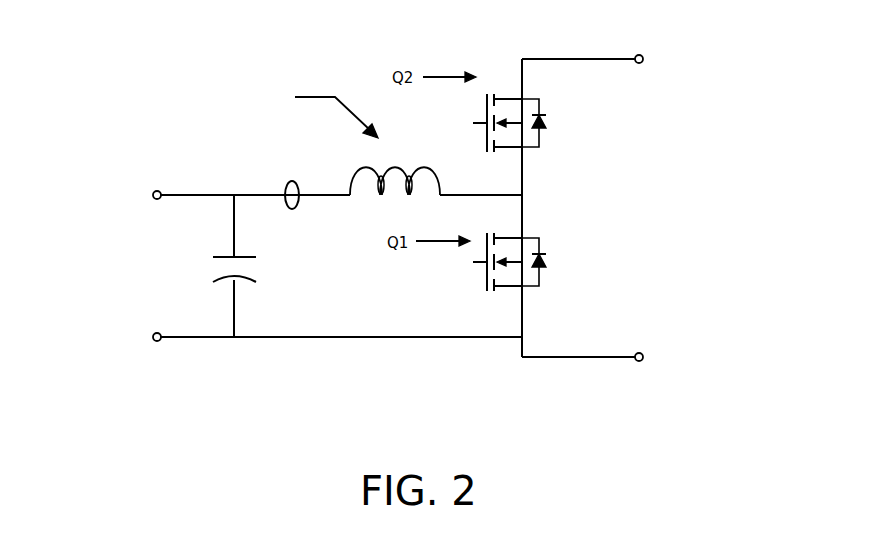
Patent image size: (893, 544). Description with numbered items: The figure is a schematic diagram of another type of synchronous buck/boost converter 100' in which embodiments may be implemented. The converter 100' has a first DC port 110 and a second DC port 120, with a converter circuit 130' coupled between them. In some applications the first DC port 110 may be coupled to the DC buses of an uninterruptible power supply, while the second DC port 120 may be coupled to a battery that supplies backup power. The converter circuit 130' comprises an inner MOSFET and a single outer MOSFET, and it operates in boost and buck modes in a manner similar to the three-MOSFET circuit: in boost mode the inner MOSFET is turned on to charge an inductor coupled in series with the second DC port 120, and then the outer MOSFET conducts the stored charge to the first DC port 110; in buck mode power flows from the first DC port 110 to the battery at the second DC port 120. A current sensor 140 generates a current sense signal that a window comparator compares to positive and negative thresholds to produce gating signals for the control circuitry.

The synchronous buck/boost converter 100' is at (339, 409).
The first DC port 110 is at (683, 118).
The second DC port 120 is at (108, 200).
The converter circuit 130' is at (274, 110).
The current sensor 140 is at (275, 178).